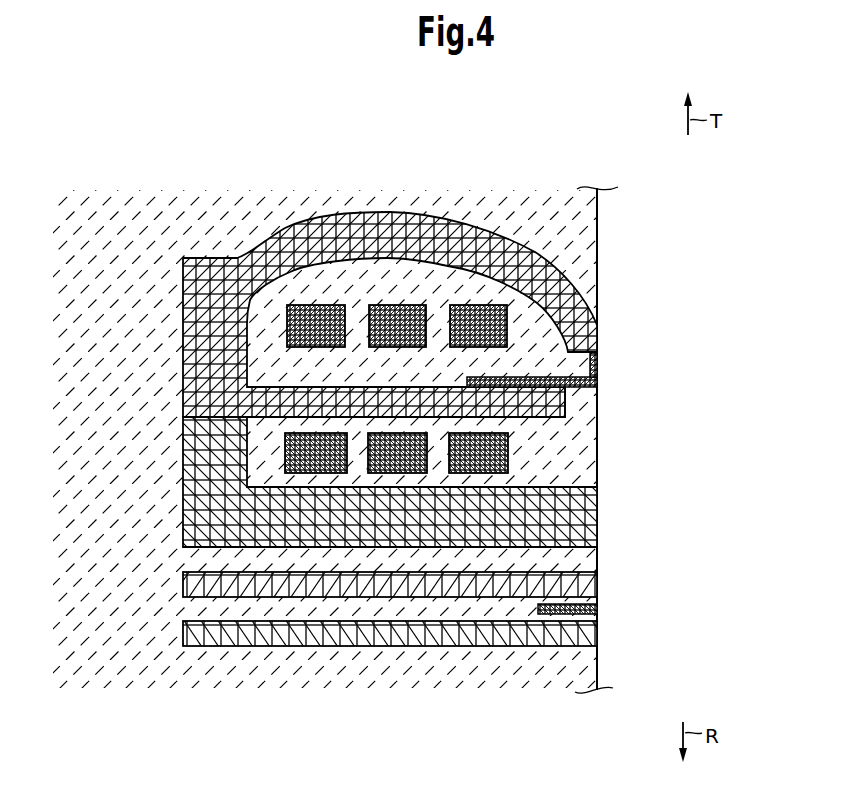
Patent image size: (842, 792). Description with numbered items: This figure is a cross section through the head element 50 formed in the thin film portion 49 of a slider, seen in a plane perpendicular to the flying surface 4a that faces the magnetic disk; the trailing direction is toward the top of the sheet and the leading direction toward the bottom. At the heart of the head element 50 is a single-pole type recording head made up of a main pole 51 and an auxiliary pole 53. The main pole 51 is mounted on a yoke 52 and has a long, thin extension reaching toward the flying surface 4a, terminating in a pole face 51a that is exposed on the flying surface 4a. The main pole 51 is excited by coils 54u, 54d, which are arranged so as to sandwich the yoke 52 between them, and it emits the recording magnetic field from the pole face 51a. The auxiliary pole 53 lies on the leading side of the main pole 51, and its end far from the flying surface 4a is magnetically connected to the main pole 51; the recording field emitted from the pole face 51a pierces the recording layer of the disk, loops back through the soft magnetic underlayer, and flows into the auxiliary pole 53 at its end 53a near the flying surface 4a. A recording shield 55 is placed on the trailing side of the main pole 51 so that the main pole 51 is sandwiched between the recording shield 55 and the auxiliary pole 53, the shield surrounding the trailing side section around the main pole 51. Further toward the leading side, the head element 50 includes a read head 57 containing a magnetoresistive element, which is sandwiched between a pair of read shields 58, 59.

The thin film portion 49 is at (176, 203).
The head element 50 is at (406, 193).
The flying surface 4a is at (607, 218).
The recording shield 55 is at (577, 282).
The yoke 52 is at (363, 398).
The pole face 51a is at (607, 381).
The main pole 51 is at (590, 395).
The coil 54u is at (377, 310).
The auxiliary pole 53 is at (580, 491).
The end of auxiliary pole 53a is at (607, 517).
The coil 54d is at (490, 452).
The read shield 58 is at (580, 587).
The read head 57 is at (580, 608).
The read shield 59 is at (580, 636).